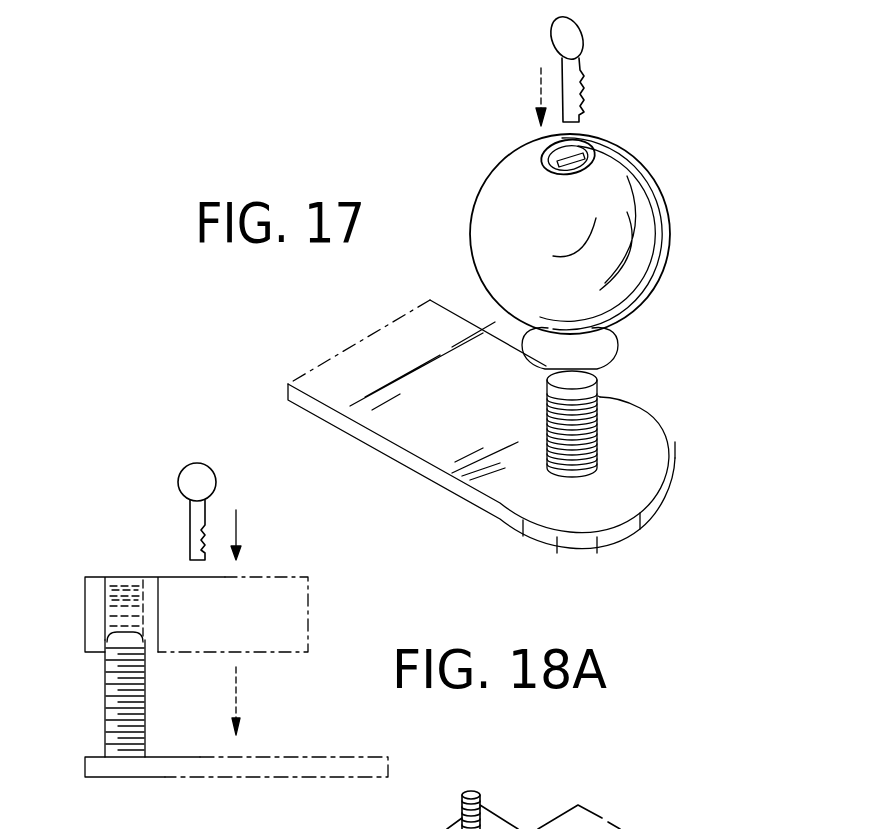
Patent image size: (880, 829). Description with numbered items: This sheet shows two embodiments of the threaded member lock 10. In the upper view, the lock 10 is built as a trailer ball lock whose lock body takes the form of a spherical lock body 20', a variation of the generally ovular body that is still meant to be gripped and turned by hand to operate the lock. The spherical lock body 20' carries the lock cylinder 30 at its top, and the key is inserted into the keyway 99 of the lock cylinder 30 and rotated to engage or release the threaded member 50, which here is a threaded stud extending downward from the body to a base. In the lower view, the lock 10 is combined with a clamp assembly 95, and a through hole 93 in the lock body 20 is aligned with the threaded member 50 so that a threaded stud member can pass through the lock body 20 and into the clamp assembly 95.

In FIG. 17, the lock 10 is at (682, 267).
In FIG. 17, the spherical lock body 20' is at (606, 216).
In FIG. 17, the lock cylinder 30 is at (590, 160).
In FIG. 17, the keyway 99 is at (574, 162).
In FIG. 18A, the lock body 20 is at (234, 614).
In FIG. 18A, the through hole 93 is at (103, 610).
In FIG. 18A, the threaded member 50 is at (105, 681).
In FIG. 18A, the clamp assembly 95 is at (112, 768).